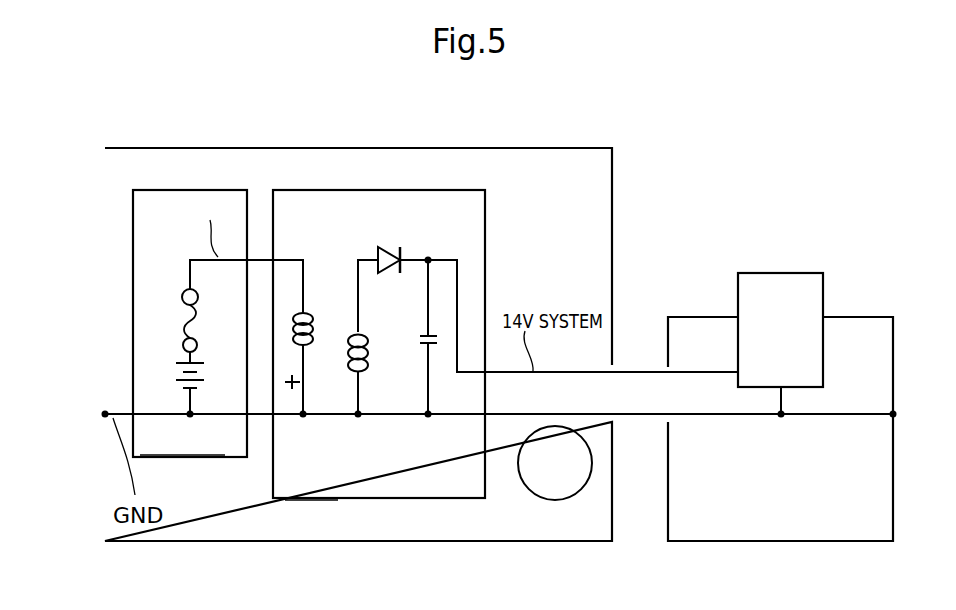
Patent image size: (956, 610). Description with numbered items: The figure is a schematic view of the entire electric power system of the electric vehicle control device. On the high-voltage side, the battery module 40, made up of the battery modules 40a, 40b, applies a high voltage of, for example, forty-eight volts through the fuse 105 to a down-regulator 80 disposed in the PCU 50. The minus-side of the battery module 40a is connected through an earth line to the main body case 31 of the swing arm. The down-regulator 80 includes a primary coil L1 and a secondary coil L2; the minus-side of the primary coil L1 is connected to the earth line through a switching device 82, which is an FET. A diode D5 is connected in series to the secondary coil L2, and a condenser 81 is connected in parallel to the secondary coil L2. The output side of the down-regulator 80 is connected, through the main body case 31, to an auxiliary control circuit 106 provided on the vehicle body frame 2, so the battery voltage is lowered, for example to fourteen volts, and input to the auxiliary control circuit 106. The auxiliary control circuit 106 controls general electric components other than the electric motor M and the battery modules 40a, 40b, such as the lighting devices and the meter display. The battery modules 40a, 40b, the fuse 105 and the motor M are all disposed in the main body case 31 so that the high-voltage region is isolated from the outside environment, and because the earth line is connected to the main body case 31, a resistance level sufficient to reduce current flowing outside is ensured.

The vehicle body frame 2 is at (843, 317).
The main body case 31 is at (103, 467).
The battery module 40 is at (222, 190).
The battery module 40a is at (202, 383).
The battery module 40b is at (224, 358).
The PCU 50 is at (435, 190).
The down-regulator 80 is at (357, 252).
The condenser 81 is at (418, 340).
The switching device 82 is at (297, 386).
The fuse 105 is at (182, 306).
The auxiliary control circuit 106 is at (785, 273).
The diode D5 is at (386, 249).
The primary coil L1 is at (307, 313).
The secondary coil L2 is at (370, 343).
The electric motor M is at (527, 485).